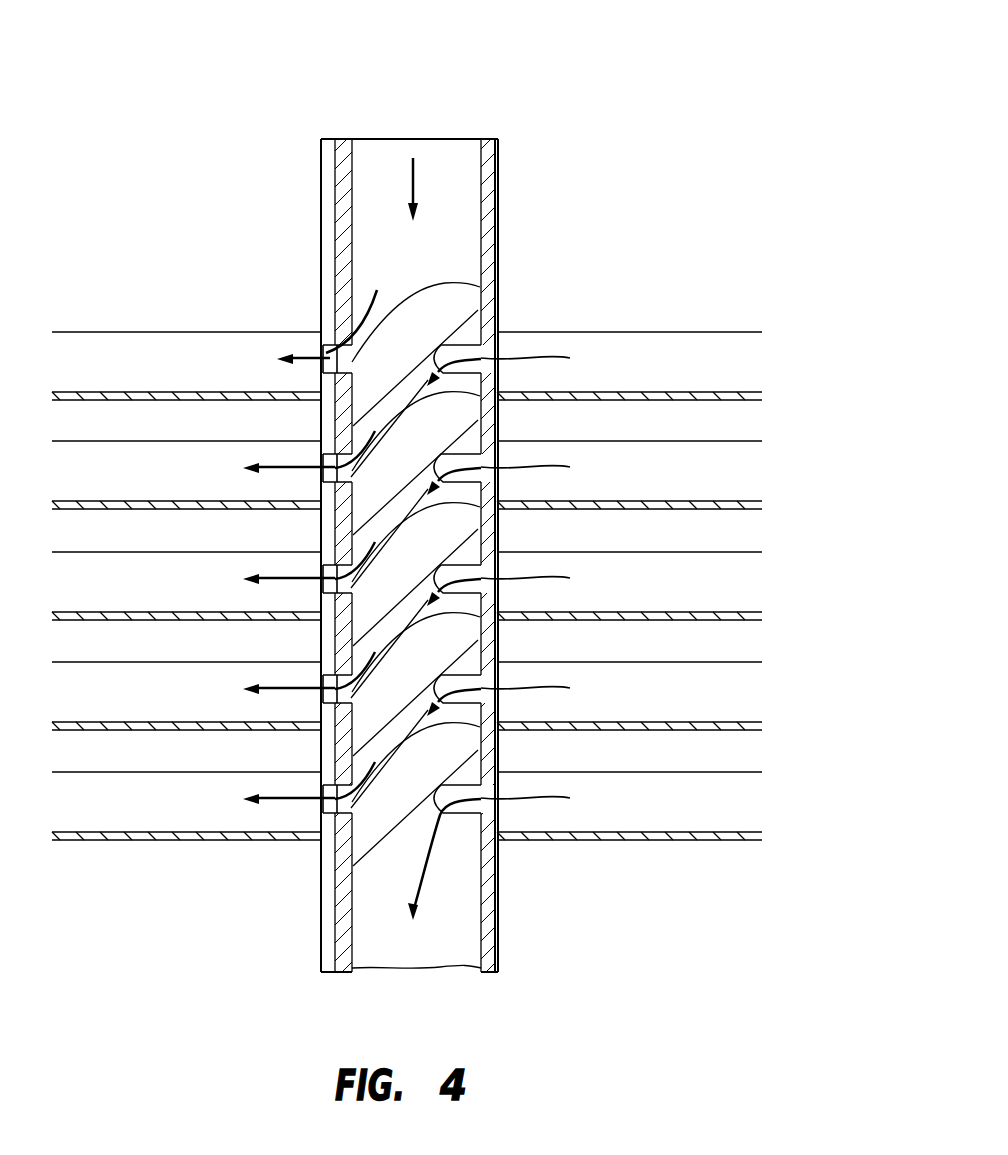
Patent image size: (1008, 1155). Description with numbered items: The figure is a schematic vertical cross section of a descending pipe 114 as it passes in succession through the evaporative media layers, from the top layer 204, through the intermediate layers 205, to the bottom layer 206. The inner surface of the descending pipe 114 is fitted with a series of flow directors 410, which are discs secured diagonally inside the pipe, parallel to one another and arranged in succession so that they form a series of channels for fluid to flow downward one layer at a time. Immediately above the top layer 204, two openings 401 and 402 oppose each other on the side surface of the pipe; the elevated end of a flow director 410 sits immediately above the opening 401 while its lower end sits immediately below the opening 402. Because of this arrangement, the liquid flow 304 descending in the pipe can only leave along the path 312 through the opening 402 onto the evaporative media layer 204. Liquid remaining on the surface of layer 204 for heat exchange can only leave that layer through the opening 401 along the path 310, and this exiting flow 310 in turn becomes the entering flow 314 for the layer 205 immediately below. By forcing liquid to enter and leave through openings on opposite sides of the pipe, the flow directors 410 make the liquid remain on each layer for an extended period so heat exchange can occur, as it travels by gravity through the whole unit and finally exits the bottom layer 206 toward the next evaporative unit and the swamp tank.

The descending pipe 114 is at (454, 242).
The top evaporative media layer 204 is at (662, 365).
The intermediate evaporative media layers 205 is at (661, 681).
The bottom evaporative media layer 206 is at (668, 815).
The liquid flow 304 is at (418, 172).
The exiting flow path 310 is at (558, 362).
The exiting path through opening 402 312 is at (277, 362).
The entering flow 314 is at (247, 470).
The opening 401 is at (446, 355).
The opening 402 is at (320, 338).
The flow directors 410 is at (437, 432).